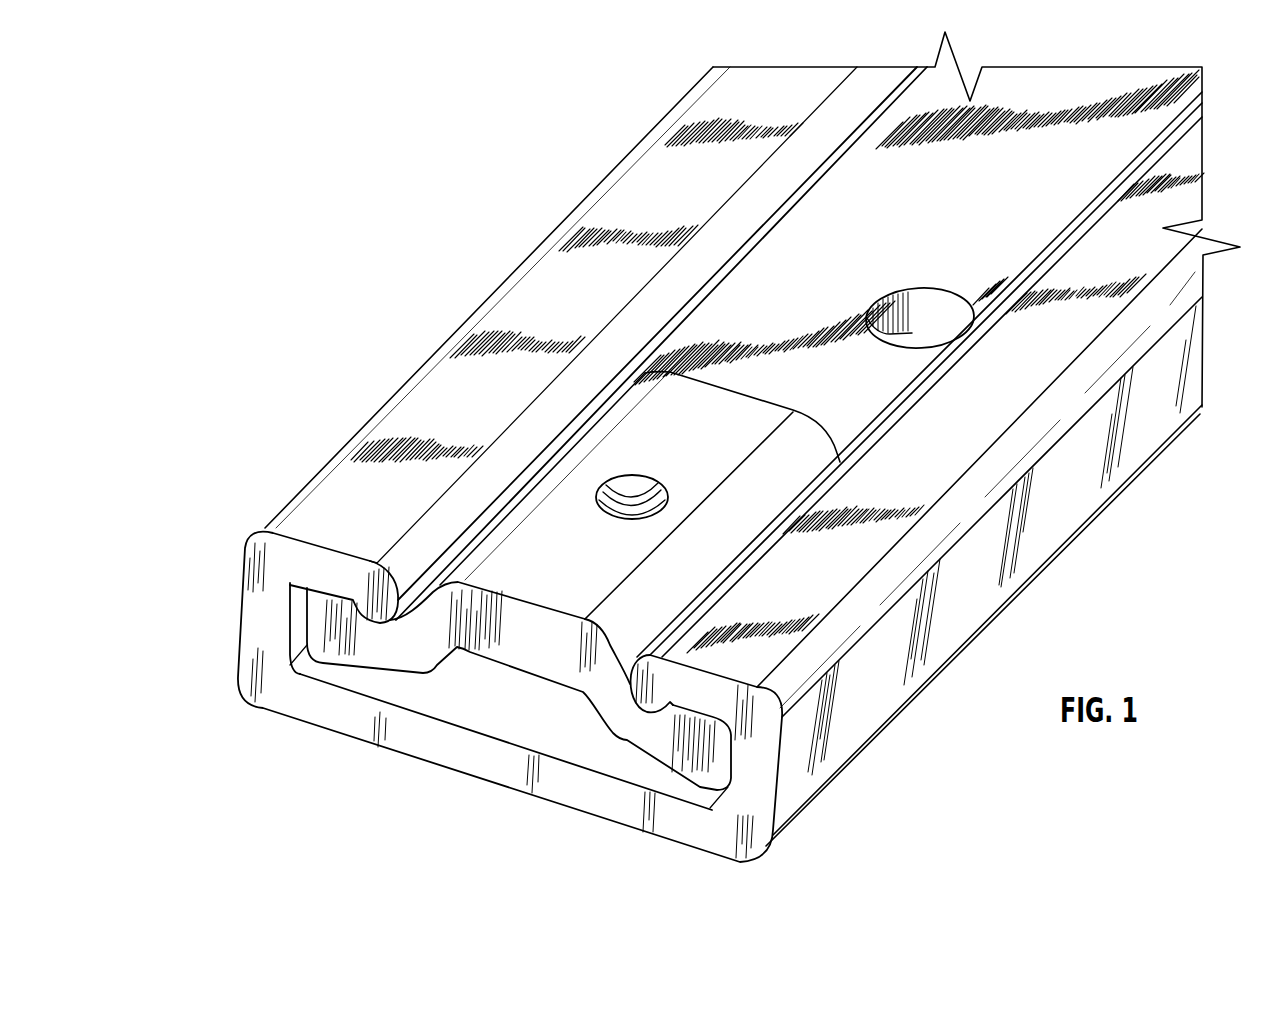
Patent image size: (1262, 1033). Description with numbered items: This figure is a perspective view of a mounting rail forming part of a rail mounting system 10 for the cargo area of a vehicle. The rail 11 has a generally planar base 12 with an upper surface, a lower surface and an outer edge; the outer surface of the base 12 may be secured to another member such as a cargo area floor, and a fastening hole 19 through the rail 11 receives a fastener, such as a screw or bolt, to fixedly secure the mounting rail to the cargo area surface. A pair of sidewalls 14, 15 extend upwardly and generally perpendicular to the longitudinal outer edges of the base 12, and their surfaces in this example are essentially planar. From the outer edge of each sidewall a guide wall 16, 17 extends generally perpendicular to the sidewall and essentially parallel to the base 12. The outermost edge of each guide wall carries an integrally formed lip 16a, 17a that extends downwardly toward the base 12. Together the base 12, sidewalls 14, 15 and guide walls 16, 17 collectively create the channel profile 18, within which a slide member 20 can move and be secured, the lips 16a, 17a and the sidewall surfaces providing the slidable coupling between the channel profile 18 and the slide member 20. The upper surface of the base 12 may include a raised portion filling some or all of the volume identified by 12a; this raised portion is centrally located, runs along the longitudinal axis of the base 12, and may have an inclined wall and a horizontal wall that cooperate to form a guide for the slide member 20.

The rail mounting system 10 is at (262, 127).
The rail 11 is at (597, 64).
The base 12 is at (633, 803).
The volume for raised portion 12a is at (477, 688).
The sidewall 14 is at (757, 805).
The sidewall 15 is at (253, 638).
The guide wall 16 is at (713, 700).
The lip 16a is at (645, 660).
The guide wall 17 is at (317, 563).
The lip 17a is at (372, 582).
The channel profile 18 is at (862, 397).
The fastening hole 19 is at (912, 332).
The slide member 20 is at (584, 654).